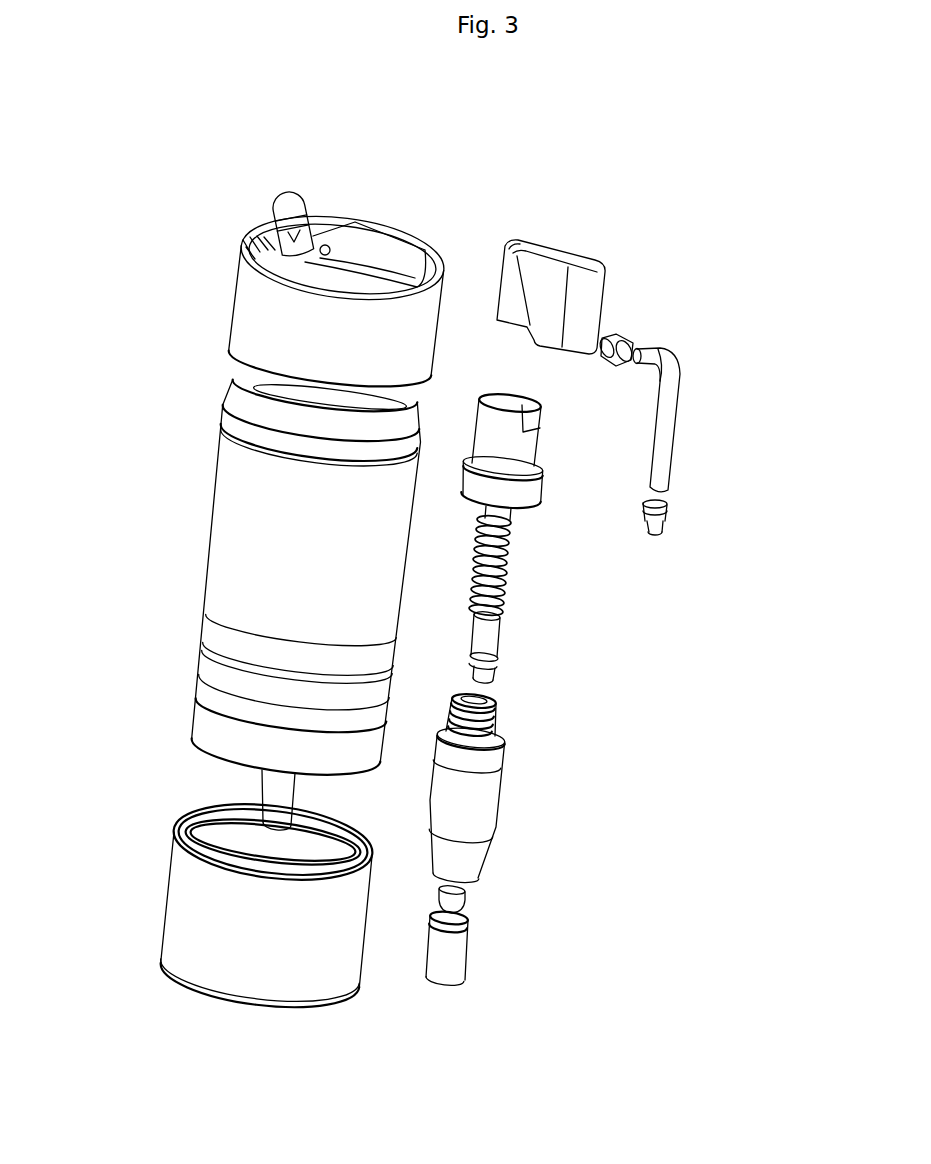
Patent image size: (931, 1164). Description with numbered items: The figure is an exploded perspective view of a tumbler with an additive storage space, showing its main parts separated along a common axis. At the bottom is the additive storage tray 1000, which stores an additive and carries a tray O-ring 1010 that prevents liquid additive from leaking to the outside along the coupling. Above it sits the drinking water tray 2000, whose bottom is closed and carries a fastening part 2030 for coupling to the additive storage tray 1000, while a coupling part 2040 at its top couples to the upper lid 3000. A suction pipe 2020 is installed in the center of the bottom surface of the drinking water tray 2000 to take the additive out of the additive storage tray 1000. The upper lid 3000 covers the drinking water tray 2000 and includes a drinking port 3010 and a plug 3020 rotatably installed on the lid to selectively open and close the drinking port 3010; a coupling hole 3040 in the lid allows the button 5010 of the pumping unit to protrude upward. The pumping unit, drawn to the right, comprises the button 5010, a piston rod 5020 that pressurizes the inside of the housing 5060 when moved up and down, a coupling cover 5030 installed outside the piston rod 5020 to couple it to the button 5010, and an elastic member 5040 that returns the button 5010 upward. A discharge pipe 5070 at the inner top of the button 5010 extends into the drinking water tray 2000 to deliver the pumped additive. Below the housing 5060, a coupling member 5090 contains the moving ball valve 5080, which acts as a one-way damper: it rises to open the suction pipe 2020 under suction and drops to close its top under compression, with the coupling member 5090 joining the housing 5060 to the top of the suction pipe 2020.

The additive storage tray 1000 is at (198, 926).
The tray O-ring 1010 is at (185, 824).
The drinking water tray 2000 is at (232, 542).
The suction pipe 2020 is at (273, 793).
The fastening part 2030 is at (207, 730).
The coupling part 2040 is at (248, 405).
The upper lid 3000 is at (253, 322).
The drinking port 3010 is at (257, 240).
The plug 3020 is at (280, 200).
The coupling hole 3040 is at (385, 262).
The button 5010 is at (560, 250).
The piston rod 5020 is at (490, 633).
The coupling cover 5030 is at (523, 463).
The elastic member 5040 is at (508, 568).
The housing 5060 is at (478, 803).
The discharge pipe 5070 is at (663, 447).
The moving ball valve 5080 is at (467, 893).
The coupling member 5090 is at (450, 963).